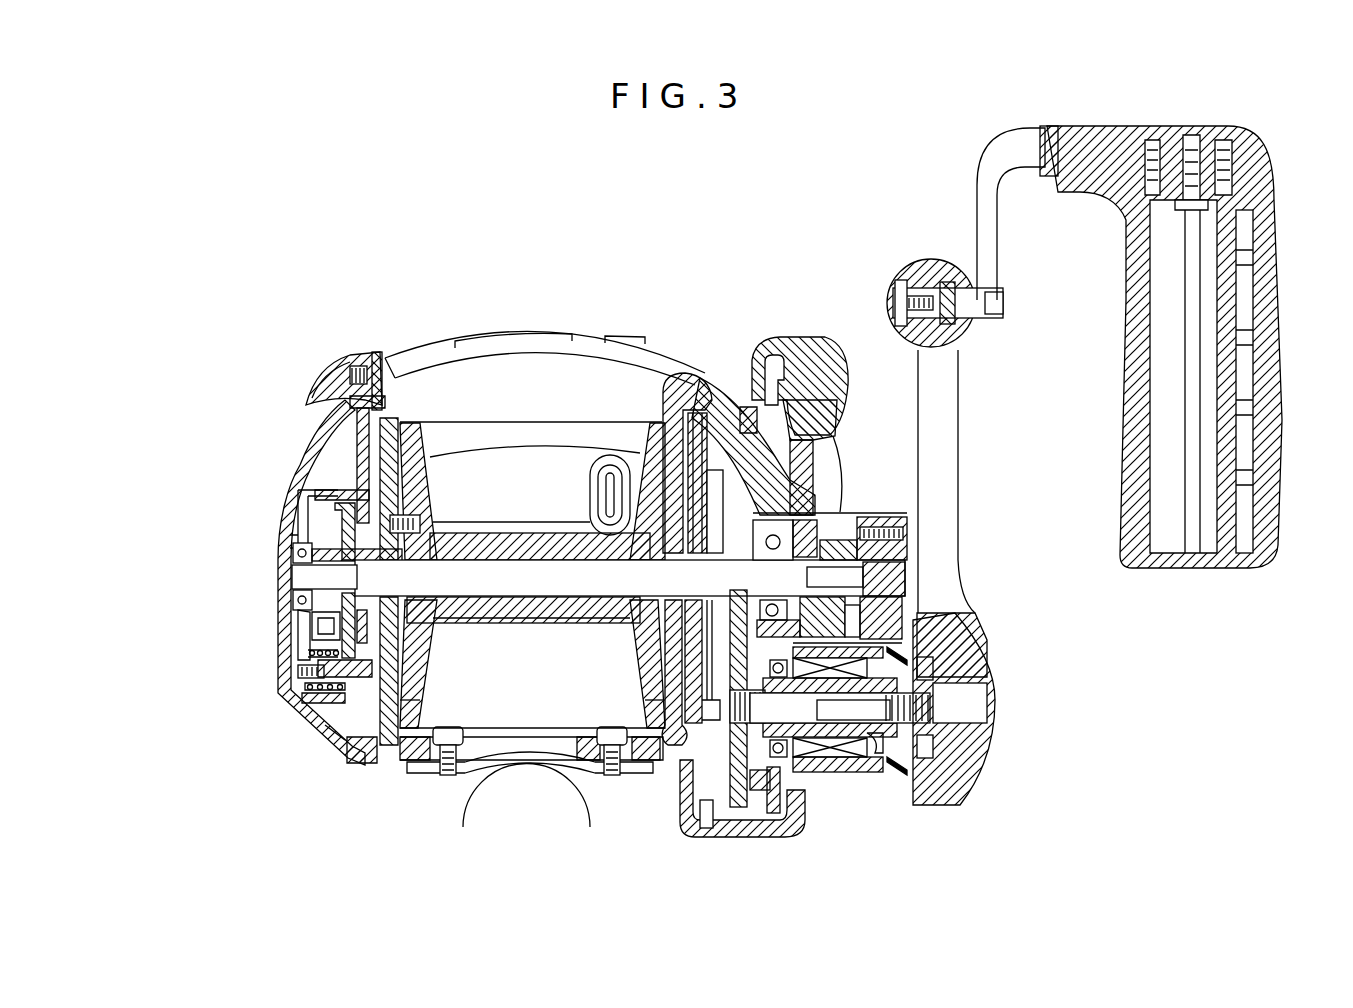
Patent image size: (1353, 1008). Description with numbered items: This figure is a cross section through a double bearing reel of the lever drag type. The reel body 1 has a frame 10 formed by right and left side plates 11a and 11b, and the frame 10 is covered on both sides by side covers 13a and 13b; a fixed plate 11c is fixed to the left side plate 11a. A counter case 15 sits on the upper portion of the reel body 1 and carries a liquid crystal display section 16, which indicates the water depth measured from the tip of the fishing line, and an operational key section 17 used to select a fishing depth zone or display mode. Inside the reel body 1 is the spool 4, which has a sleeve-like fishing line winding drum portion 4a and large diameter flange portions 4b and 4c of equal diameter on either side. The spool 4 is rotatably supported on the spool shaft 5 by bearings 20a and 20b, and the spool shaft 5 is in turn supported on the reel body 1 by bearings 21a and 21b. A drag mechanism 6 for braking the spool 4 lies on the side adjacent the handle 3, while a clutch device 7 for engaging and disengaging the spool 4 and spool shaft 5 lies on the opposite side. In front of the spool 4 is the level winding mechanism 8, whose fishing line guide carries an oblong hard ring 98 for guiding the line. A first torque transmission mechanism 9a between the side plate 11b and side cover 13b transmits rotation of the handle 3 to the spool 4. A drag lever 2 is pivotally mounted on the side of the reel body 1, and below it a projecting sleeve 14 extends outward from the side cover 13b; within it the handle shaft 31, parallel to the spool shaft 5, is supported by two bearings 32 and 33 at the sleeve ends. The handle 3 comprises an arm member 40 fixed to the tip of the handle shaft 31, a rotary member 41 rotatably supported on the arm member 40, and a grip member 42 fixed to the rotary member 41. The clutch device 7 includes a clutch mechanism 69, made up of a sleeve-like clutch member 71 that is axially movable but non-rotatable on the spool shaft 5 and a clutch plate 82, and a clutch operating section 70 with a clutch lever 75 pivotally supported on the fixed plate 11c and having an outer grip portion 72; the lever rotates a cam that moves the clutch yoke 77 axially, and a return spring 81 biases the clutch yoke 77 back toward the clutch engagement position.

The reel body 1 is at (722, 388).
The drag lever 2 is at (812, 335).
The handle 3 is at (965, 468).
The spool 4 is at (532, 575).
The fishing line winding drum portion 4a is at (531, 618).
The flange portion 4b is at (433, 703).
The flange portion 4c is at (645, 703).
The spool shaft 5 is at (498, 575).
The drag mechanism 6 is at (716, 492).
The clutch device 7 is at (316, 478).
The level winding mechanism 8 is at (570, 498).
The first torque transmission mechanism 9a is at (722, 768).
The frame 10 is at (378, 772).
The left side plate 11a is at (390, 762).
The right side plate 11b is at (690, 760).
The fixed plate 11c is at (325, 728).
The side cover 13a is at (330, 760).
The side cover 13b is at (697, 380).
The projecting sleeve 14 is at (840, 775).
The counter case 15 is at (663, 352).
The liquid crystal display section 16 is at (529, 333).
The operational key section 17 is at (622, 335).
The bearing 20a is at (433, 622).
The bearing 20b is at (630, 622).
The bearing 21a is at (296, 622).
The bearing 21b is at (815, 525).
The handle shaft 31 is at (870, 758).
The bearing 32 is at (790, 772).
The bearing 33 is at (903, 772).
The arm member 40 is at (950, 555).
The rotary member 41 is at (993, 222).
The grip member 42 is at (1272, 240).
The clutch mechanism 69 is at (278, 556).
The clutch operating section 70 is at (315, 504).
The clutch member 71 is at (284, 535).
The grip portion 72 is at (352, 354).
The clutch lever 75 is at (350, 418).
The clutch yoke 77 is at (285, 592).
The return spring 81 is at (292, 706).
The clutch plate 82 is at (438, 522).
The oblong hard ring 98 is at (597, 455).